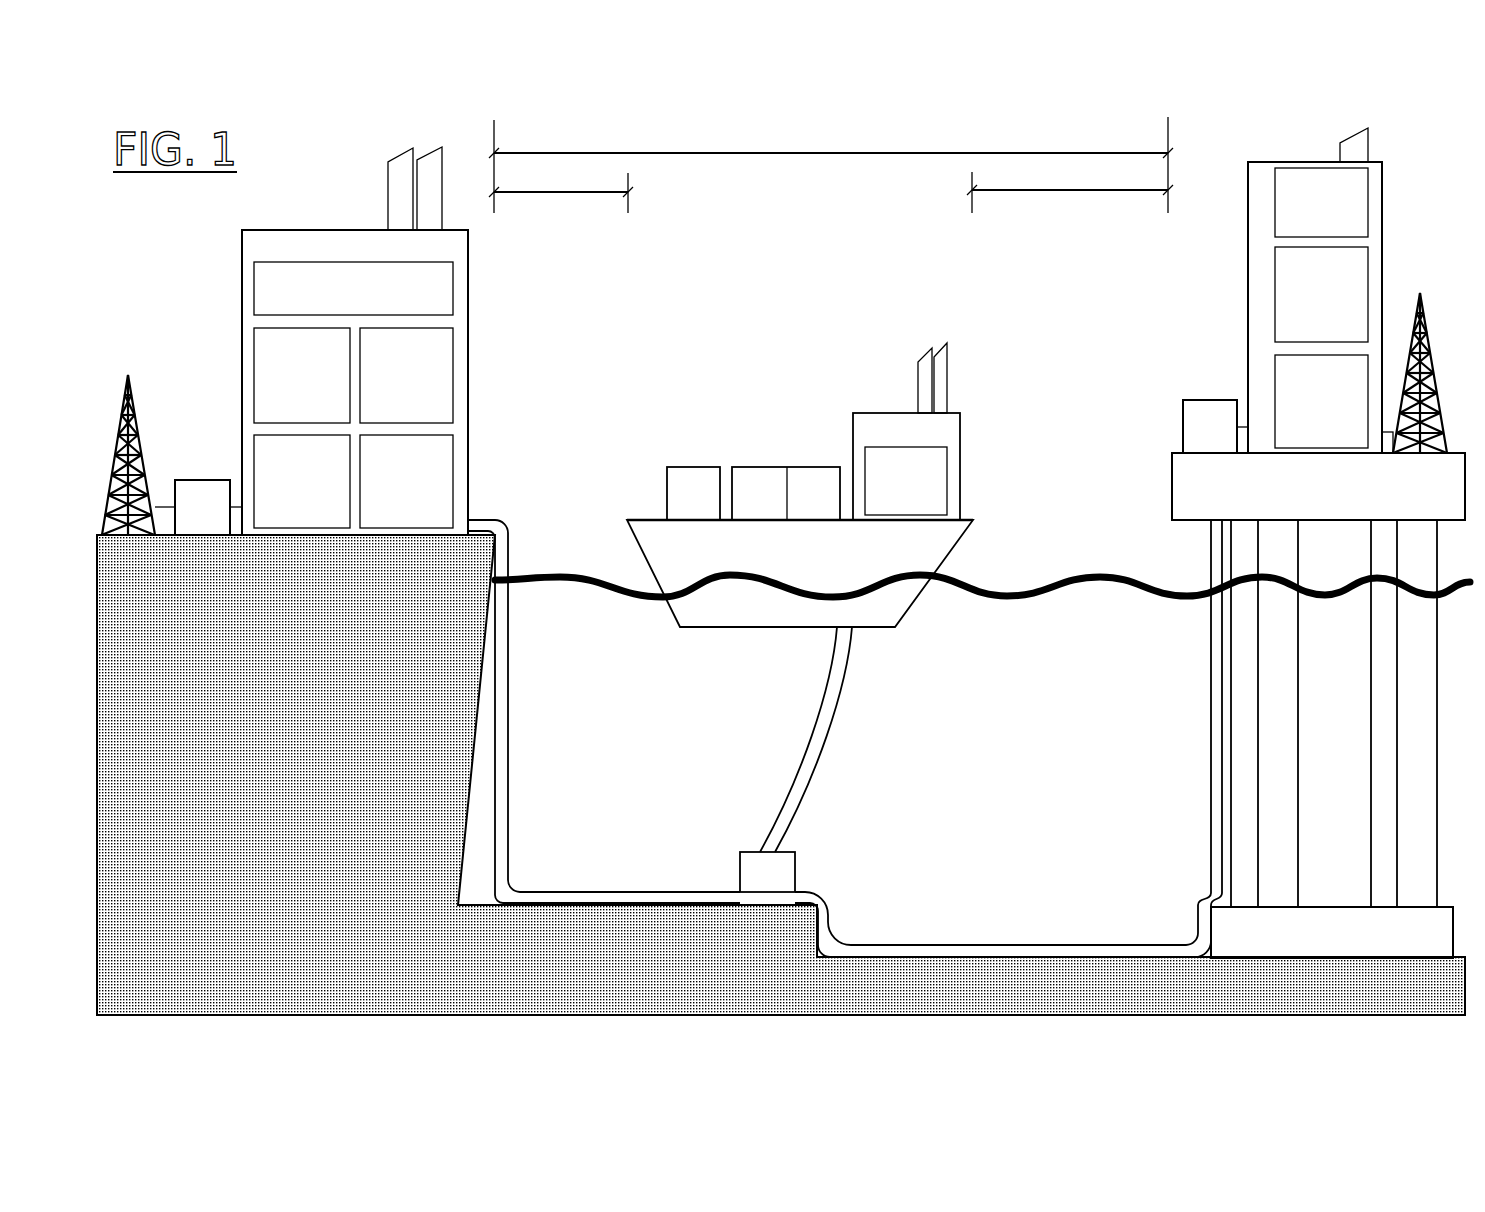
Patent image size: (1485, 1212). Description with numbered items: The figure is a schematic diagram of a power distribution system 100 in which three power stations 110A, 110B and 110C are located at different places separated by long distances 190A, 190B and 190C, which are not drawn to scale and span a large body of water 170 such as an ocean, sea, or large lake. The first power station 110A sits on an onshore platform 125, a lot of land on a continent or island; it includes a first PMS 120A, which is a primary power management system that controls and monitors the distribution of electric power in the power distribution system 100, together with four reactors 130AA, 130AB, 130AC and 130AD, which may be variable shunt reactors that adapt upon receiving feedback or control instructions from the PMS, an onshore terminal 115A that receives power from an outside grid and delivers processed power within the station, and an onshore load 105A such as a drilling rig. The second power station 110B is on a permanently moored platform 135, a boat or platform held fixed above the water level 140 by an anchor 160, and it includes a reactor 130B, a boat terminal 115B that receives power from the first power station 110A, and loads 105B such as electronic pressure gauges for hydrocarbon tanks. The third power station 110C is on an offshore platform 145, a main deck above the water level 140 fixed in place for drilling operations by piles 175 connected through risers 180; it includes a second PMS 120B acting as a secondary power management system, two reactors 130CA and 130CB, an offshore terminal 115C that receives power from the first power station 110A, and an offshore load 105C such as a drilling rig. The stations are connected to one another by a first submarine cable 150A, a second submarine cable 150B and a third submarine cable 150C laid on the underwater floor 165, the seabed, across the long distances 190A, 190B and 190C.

The power distribution system 100 is at (855, 235).
The onshore load 105A is at (133, 407).
The loads 105B is at (724, 409).
The offshore load 105C is at (1425, 340).
The first power station 110A is at (397, 341).
The second power station 110B is at (823, 462).
The third power station 110C is at (1276, 543).
The onshore terminal 115A is at (202, 507).
The boat terminal 115B is at (695, 467).
The offshore terminal 115C is at (1202, 413).
The first PMS 120A is at (326, 299).
The second PMS 120B is at (1295, 213).
The onshore platform 125 is at (435, 575).
The reactor 130AA is at (269, 386).
The reactor 130AB is at (374, 386).
The reactor 130AC is at (269, 491).
The reactor 130AD is at (373, 491).
The reactor 130B is at (879, 492).
The reactor 130CA is at (1289, 305).
The reactor 130CB is at (1289, 411).
The permanently moored platform 135 is at (945, 540).
The water level 140 is at (987, 588).
The offshore platform 145 is at (1202, 482).
The first submarine cable 150A is at (505, 760).
The second submarine cable 150B is at (812, 738).
The third submarine cable 150C is at (1217, 755).
The anchor 160 is at (750, 865).
The underwater floor 165 is at (973, 975).
The body of water 170 is at (985, 739).
The piles 175 is at (1237, 923).
The risers 180 is at (1278, 873).
The long distance 190A is at (831, 165).
The long distance 190B is at (561, 185).
The long distance 190C is at (1070, 186).